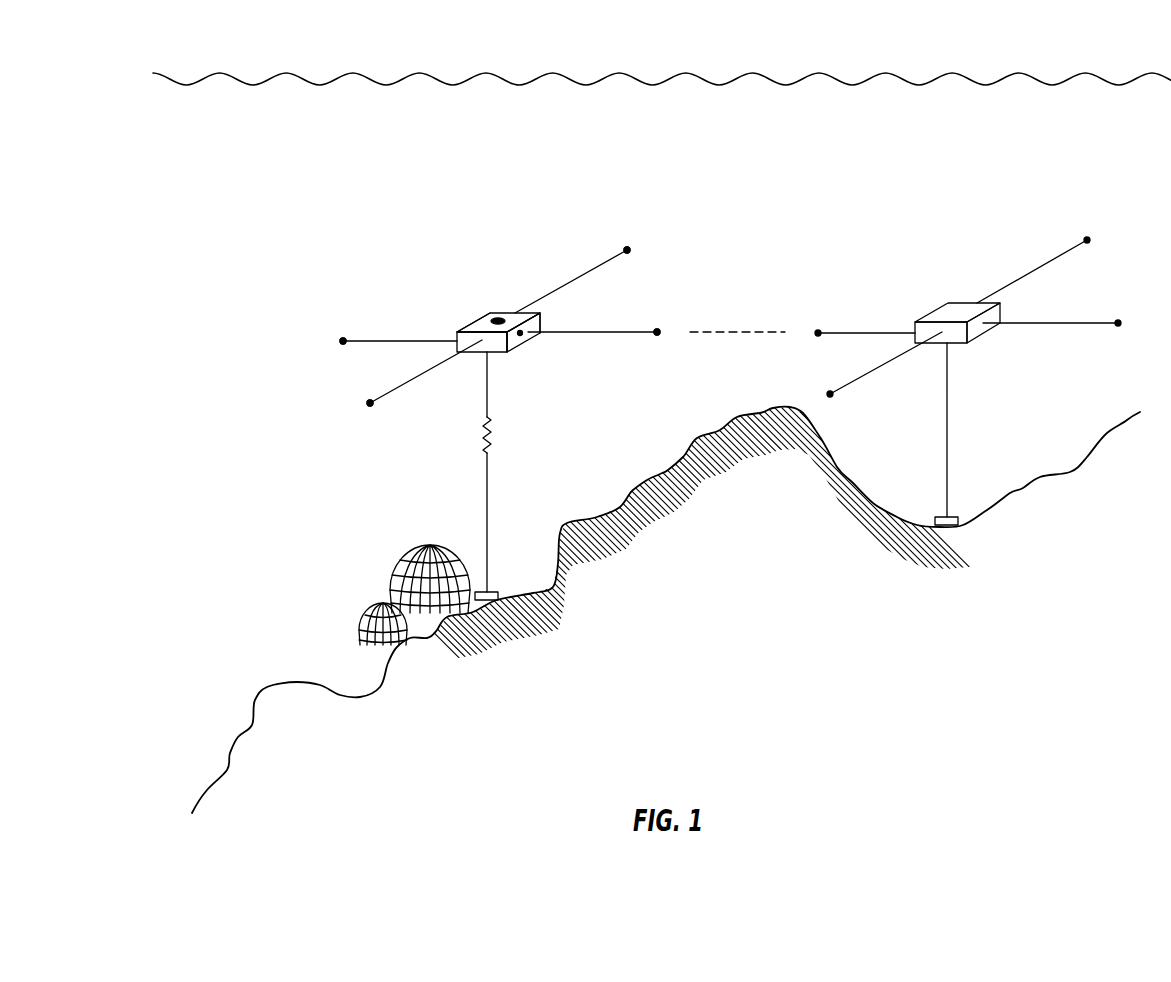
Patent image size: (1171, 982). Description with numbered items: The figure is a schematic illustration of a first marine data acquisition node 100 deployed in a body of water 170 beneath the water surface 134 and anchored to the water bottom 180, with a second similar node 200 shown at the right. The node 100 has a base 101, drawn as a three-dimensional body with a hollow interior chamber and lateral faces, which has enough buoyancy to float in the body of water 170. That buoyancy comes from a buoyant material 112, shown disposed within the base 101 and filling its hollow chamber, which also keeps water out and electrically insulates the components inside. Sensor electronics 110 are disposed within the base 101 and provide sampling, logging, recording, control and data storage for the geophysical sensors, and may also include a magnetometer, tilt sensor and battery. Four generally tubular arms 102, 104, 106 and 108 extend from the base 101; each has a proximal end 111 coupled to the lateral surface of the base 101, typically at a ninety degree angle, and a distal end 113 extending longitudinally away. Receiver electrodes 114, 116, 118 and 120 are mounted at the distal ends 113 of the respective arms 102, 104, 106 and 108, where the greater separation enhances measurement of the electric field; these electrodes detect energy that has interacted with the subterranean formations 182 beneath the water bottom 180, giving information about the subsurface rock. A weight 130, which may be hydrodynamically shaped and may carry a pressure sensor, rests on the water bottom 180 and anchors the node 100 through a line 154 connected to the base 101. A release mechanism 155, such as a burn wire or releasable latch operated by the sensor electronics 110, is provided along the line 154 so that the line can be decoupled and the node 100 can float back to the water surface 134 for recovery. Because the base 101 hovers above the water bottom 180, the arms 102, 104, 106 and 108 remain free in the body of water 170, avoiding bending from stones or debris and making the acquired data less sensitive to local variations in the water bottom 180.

The first marine data acquisition node 100 is at (393, 228).
The base 101 is at (482, 322).
The arm 102 is at (580, 275).
The arm 104 is at (612, 332).
The arm 106 is at (420, 374).
The arm 108 is at (383, 341).
The sensor electronics 110 is at (520, 336).
The proximal end 111 is at (517, 312).
The buoyant material 112 is at (497, 317).
The distal end 113 is at (614, 254).
The receiver electrode 114 is at (629, 249).
The receiver electrode 116 is at (659, 330).
The receiver electrode 118 is at (369, 405).
The receiver electrode 120 is at (344, 340).
The weight 130 is at (493, 589).
The water surface 134 is at (487, 72).
The line 154 is at (485, 483).
The release mechanism 155 is at (489, 440).
The body of water 170 is at (813, 169).
The water bottom 180 is at (665, 473).
The subterranean formations 182 is at (745, 705).
The second seismic node system 200 is at (938, 249).